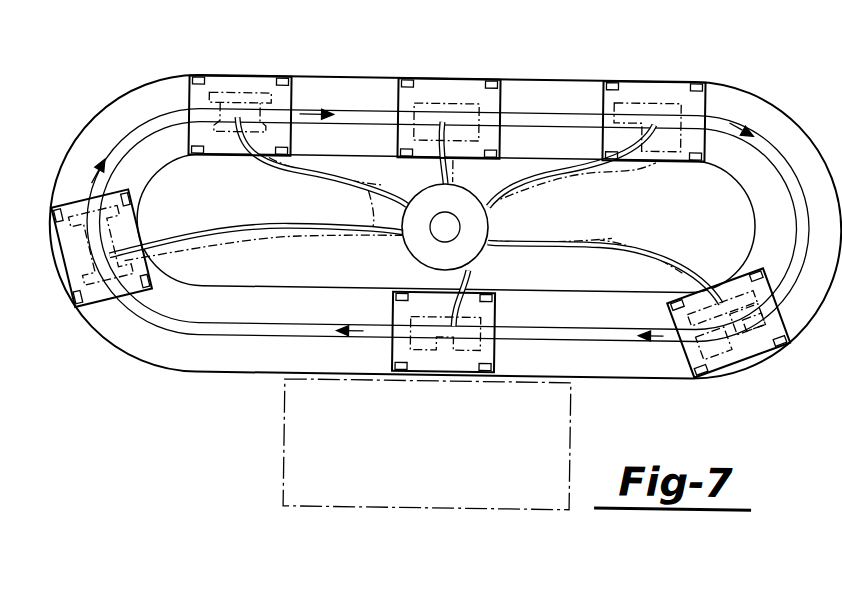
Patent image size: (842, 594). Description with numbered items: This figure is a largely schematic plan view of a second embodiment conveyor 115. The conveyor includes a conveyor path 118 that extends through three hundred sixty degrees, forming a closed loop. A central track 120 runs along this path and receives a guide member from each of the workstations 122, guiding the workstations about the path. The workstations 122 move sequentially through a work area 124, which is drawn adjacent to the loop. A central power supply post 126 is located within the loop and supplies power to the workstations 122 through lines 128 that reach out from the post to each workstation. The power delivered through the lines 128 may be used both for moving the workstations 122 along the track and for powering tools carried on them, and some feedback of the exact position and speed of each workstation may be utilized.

The second embodiment conveyor 115 is at (756, 406).
The conveyor path 118 is at (230, 354).
The central track 120 is at (172, 337).
The workstations 122 is at (247, 80).
The work area 124 is at (434, 456).
The central power supply post 126 is at (421, 252).
The lines 128 is at (376, 194).